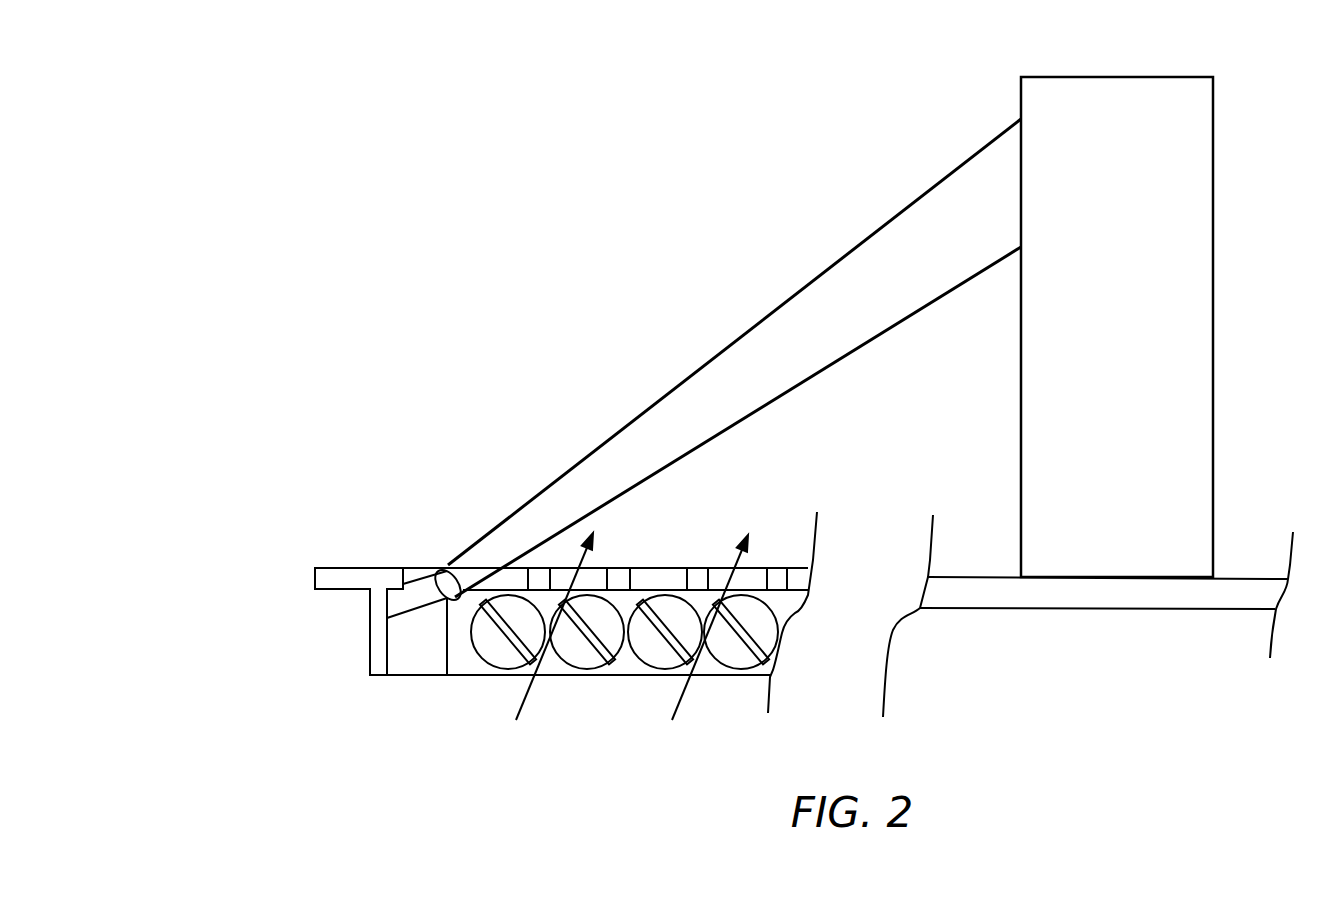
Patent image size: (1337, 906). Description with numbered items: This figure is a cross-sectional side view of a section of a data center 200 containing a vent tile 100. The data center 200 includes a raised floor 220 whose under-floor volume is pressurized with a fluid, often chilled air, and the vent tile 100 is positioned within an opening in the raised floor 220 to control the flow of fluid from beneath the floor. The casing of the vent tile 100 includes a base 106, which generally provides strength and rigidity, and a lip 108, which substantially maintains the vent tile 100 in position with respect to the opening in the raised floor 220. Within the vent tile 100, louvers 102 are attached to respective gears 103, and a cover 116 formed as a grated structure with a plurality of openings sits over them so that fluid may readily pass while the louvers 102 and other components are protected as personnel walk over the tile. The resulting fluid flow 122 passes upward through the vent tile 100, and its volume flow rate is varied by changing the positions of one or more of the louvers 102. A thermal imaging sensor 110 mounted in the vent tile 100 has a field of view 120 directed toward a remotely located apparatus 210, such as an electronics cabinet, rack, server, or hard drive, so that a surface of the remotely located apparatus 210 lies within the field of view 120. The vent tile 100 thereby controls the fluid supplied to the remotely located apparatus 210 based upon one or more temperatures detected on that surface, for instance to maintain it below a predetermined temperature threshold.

The vent tile 100 is at (298, 395).
The louvers 102 is at (525, 662).
The gears 103 is at (588, 678).
The base 106 is at (367, 700).
The lip 108 is at (343, 590).
The thermal imaging sensor 110 is at (437, 567).
The cover 116 is at (658, 570).
The field of view 120 is at (688, 373).
The fluid flow 122 is at (690, 680).
The data center 200 is at (525, 208).
The remotely located apparatus 210 is at (1098, 376).
The raised floor 220 is at (1027, 610).